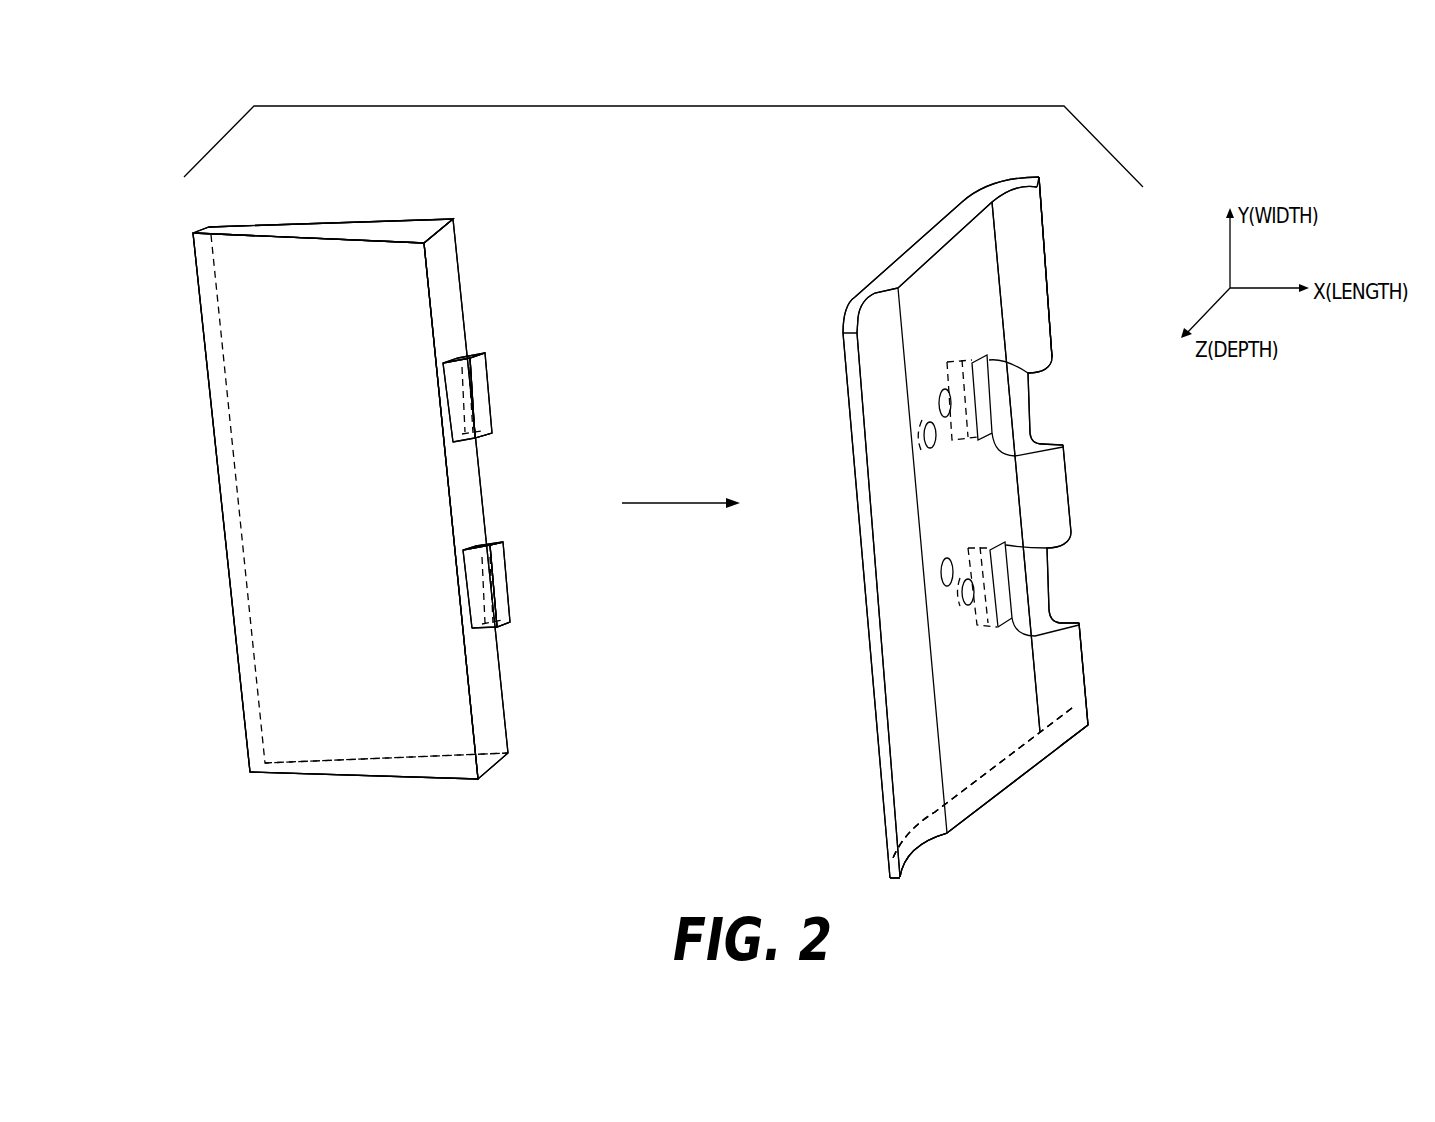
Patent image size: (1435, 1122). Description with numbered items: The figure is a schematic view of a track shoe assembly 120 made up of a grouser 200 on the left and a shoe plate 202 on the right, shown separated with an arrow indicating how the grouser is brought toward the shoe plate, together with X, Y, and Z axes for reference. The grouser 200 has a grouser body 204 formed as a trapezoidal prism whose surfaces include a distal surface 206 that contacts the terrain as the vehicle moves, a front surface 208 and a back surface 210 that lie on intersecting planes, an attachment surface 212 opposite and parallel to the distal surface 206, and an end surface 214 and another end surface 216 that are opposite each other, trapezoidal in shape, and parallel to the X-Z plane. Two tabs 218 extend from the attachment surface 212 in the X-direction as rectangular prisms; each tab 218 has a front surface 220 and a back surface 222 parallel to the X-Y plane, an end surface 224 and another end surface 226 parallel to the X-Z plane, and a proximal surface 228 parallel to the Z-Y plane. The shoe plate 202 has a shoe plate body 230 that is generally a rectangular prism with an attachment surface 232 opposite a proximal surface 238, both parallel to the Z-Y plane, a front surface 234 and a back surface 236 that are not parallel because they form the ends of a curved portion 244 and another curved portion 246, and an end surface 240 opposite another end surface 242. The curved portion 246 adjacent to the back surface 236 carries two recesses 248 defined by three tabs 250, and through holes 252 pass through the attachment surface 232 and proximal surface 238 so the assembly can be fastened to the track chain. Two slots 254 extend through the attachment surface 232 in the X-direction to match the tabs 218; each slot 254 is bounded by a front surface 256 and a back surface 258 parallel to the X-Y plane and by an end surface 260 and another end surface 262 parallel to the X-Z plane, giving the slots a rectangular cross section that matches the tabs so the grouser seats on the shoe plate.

The track shoe assembly 120 is at (680, 104).
The grouser 200 is at (308, 518).
The shoe plate 202 is at (929, 520).
The grouser body 204 is at (267, 680).
The distal surface 206 is at (223, 487).
The front surface 208 is at (283, 745).
The back surface 210 is at (261, 222).
The attachment surface 212 is at (443, 243).
The end surface 214 is at (402, 763).
The other end surface 216 is at (343, 222).
The tab 218 is at (488, 417).
The front surface 220 is at (457, 385).
The back surface 222 is at (470, 355).
The end surface 224 is at (480, 445).
The other end surface 226 is at (460, 358).
The proximal surface 228 is at (488, 383).
The shoe plate body 230 is at (987, 755).
The attachment surface 232 is at (890, 262).
The front surface 234 is at (903, 880).
The back surface 236 is at (1043, 217).
The proximal surface 238 is at (1088, 728).
The end surface 240 is at (1058, 732).
The other end surface 242 is at (945, 222).
The curved portion 244 is at (907, 777).
The other curved portion 246 is at (1030, 268).
The recess 248 is at (1057, 423).
The tab 250 is at (1037, 303).
The through hole 252 is at (937, 415).
The slot 254 is at (1030, 377).
The front surface 256 is at (948, 430).
The back surface 258 is at (963, 775).
The end surface 260 is at (1063, 445).
The other end surface 262 is at (972, 360).